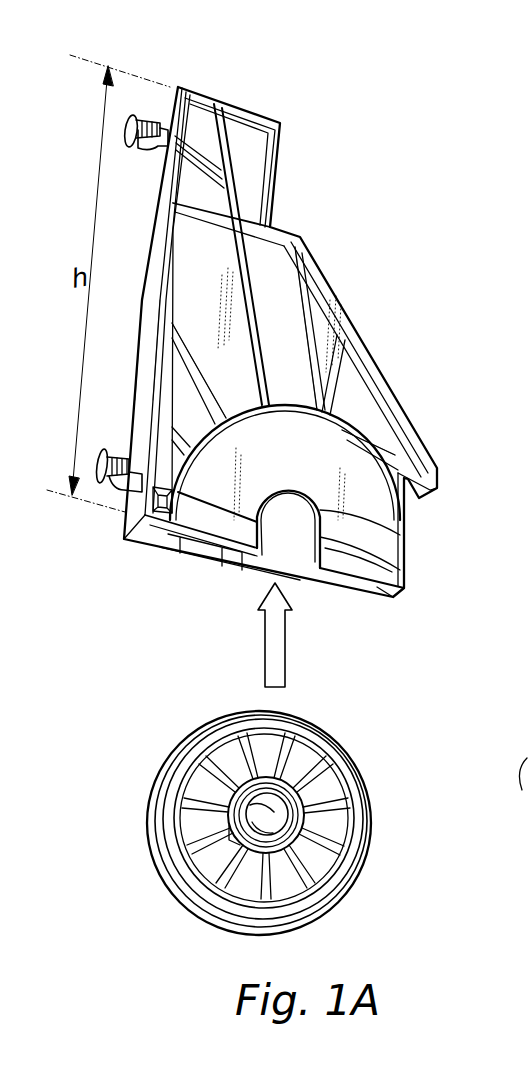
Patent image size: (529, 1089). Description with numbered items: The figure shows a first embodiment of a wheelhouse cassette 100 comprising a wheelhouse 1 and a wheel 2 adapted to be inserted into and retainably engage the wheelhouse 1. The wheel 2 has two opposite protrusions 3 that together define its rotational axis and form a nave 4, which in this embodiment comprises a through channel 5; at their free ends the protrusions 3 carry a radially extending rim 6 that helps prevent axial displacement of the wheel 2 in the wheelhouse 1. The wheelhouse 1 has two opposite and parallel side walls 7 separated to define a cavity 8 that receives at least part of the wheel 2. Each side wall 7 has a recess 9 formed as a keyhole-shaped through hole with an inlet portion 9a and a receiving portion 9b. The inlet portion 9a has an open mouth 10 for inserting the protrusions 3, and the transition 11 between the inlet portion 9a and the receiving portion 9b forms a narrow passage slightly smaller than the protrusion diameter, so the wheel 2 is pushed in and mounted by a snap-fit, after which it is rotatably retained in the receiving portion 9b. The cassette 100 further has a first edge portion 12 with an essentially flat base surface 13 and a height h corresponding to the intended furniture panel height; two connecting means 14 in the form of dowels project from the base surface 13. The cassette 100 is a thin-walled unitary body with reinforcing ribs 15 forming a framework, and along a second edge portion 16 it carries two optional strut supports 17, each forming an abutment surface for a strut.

The wheelhouse cassette 100 is at (410, 237).
The wheelhouse 1 is at (327, 463).
The wheel 2 is at (355, 780).
The protrusions 3 is at (300, 815).
The nave 4 is at (300, 820).
The through channel 5 is at (300, 830).
The rim 6 is at (300, 777).
The side walls 7 is at (188, 540).
The cavity 8 is at (172, 538).
The recess 9 is at (323, 560).
The inlet portion 9a is at (330, 556).
The receiving portion 9b is at (327, 513).
The open mouth 10 is at (258, 567).
The transition 11 is at (225, 497).
The first edge portion 12 is at (150, 290).
The base surface 13 is at (142, 338).
The connecting means 14 is at (130, 118).
The reinforcing ribs 15 is at (257, 322).
The second edge portion 16 is at (400, 405).
The strut supports 17 is at (278, 230).